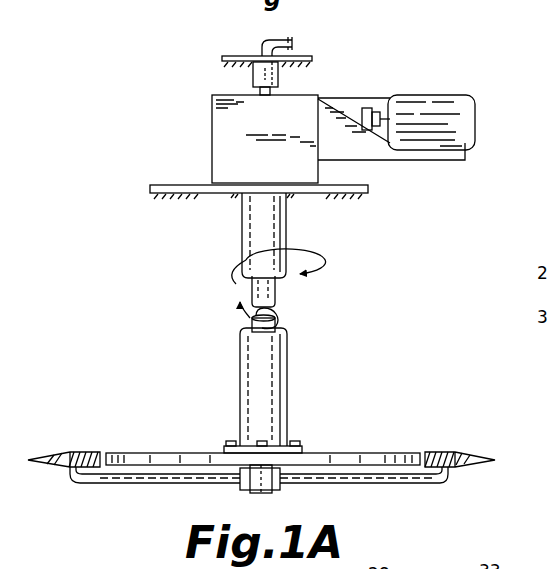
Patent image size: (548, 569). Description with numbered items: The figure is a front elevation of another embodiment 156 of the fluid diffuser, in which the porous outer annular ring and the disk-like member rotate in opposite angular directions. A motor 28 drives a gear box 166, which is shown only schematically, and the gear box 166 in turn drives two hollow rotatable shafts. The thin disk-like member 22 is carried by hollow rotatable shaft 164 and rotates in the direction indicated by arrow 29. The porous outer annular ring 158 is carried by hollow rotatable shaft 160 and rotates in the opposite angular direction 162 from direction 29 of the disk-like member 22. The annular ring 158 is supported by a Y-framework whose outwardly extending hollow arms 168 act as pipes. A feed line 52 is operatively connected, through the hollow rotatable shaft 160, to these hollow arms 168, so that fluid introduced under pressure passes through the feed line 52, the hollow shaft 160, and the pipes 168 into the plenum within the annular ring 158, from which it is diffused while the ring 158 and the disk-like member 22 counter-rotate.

The feed line 52 is at (262, 43).
The motor 28 is at (455, 105).
The gear box 166 is at (225, 140).
The fluid diffuser embodiment 156 is at (155, 228).
The direction of rotation 29 is at (243, 262).
The opposite angular direction 162 is at (288, 310).
The hollow rotatable shaft 160 is at (272, 332).
The hollow rotatable shaft 164 is at (258, 358).
The disk-like member 22 is at (195, 450).
The porous outer annular ring 158 is at (452, 452).
The hollow arms 168 is at (160, 484).